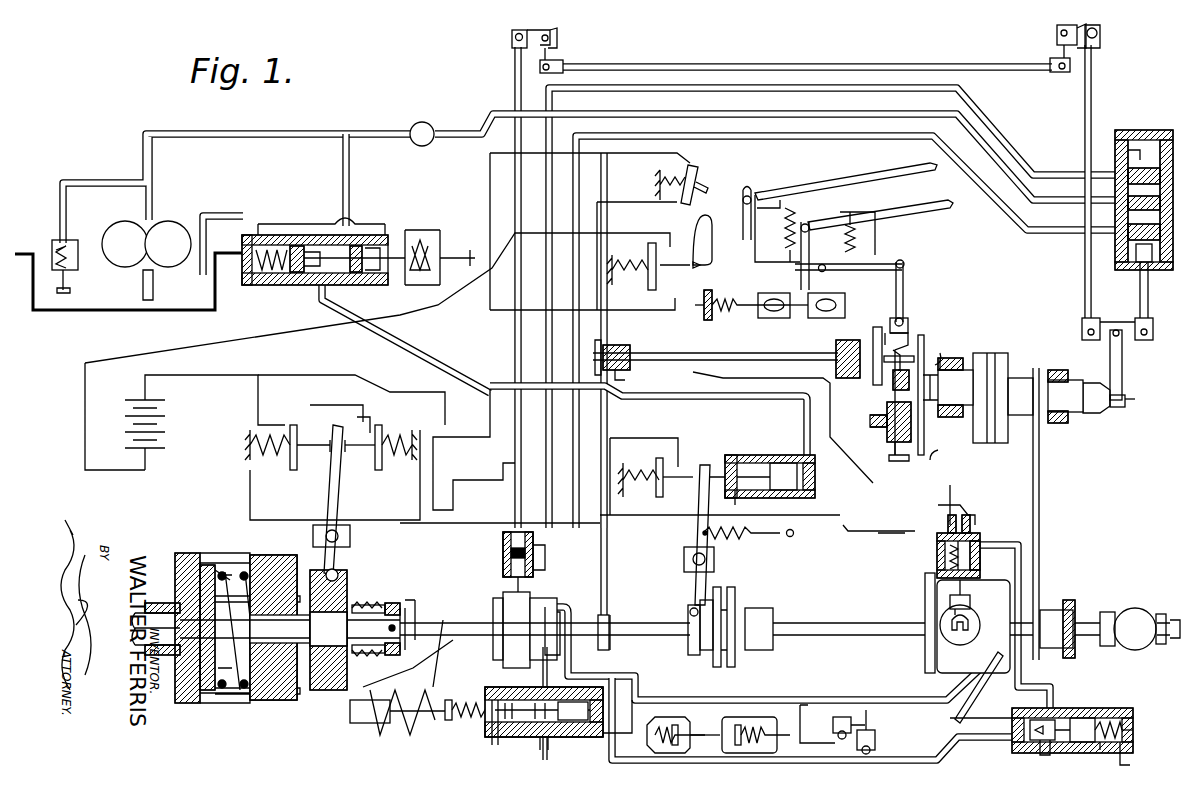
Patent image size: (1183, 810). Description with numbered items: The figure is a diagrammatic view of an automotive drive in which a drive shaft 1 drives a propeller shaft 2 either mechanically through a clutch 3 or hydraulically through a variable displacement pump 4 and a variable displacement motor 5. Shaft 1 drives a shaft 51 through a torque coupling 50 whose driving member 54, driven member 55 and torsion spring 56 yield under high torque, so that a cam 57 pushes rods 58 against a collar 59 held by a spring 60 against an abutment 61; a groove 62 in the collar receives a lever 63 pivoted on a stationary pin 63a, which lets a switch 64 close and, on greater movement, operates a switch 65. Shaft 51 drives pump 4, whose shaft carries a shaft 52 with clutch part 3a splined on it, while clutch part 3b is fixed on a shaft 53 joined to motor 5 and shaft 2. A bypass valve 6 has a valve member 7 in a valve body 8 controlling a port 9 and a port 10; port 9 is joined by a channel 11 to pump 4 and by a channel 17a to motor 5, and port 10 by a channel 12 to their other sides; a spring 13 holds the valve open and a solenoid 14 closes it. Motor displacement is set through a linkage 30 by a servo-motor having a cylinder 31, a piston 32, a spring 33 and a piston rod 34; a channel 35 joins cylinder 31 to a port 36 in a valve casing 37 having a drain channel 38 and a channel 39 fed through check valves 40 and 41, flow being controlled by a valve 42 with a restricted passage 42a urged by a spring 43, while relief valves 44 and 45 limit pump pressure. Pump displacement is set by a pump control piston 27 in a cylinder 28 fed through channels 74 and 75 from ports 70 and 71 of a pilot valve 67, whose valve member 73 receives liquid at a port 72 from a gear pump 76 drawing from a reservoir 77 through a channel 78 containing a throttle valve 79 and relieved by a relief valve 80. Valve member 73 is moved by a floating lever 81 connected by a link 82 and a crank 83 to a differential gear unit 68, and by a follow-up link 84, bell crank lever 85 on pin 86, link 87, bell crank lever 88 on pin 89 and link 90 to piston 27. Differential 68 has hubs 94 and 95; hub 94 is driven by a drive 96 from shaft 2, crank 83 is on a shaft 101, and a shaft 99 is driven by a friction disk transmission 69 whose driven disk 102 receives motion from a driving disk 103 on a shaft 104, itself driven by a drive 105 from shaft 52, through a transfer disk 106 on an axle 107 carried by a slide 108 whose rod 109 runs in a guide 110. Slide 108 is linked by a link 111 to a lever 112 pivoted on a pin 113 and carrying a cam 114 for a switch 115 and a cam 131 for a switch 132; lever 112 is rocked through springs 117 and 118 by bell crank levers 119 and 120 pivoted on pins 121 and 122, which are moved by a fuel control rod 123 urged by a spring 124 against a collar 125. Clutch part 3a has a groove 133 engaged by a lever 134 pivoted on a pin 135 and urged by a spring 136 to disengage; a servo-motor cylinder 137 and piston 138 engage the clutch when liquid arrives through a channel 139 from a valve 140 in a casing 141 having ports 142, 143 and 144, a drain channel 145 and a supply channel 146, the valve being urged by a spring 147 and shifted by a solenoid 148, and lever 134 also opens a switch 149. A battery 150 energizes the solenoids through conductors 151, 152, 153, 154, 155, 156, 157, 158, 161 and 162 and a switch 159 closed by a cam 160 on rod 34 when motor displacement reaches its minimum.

The input shaft 1 is at (140, 604).
The output shaft ball joint 2 is at (1090, 618).
The pulley 3 is at (728, 585).
The pulley flange 3a is at (725, 667).
The pulley hub 3b is at (764, 650).
The clutch pulley 4 is at (493, 600).
The governor housing 5 is at (935, 660).
The valve assembly 6 is at (542, 770).
The valve piston 7 is at (590, 713).
The valve body 8 is at (601, 736).
The valve stem 9 is at (540, 737).
The valve stem 10 is at (575, 737).
The link 11 is at (543, 675).
The pipe 12 is at (572, 660).
The spring 13 is at (472, 720).
The spring 14 is at (407, 736).
The pipe 17a is at (618, 770).
The valve 27 is at (502, 550).
The valve body 28 is at (502, 565).
The governor weight block 30 is at (948, 600).
The valve body 31 is at (937, 568).
The valve plug 32 is at (980, 560).
The spring 33 is at (950, 548).
The valve cap 34 is at (976, 532).
The pipe 35 is at (1040, 682).
The port 36 is at (1048, 755).
The port 37 is at (1133, 725).
The port 38 is at (1128, 762).
The lever 39 is at (993, 723).
The solenoid 40 is at (875, 740).
The solenoid 41 is at (838, 703).
The valve 42 is at (1083, 720).
The port 42a is at (1100, 755).
The spring 43 is at (1112, 720).
The dashpot 44 is at (745, 720).
The dashpot 45 is at (657, 720).
The clutch actuator 50 is at (240, 545).
The link 51 is at (439, 630).
The shaft 52 is at (661, 645).
The shaft 53 is at (830, 622).
The cylinder head 54 is at (188, 705).
The piston 55 is at (275, 700).
The spring 56 is at (228, 700).
The end wall 57 is at (210, 700).
The cylinder wall 58 is at (297, 596).
The pin 59 is at (337, 573).
The spring 60 is at (360, 606).
The collar 61 is at (388, 605).
The block 62 is at (340, 690).
The lever 63 is at (349, 426).
The pivot 63a is at (350, 535).
The contact plate 64 is at (378, 472).
The contact plate 65 is at (293, 472).
The control valve 67 is at (1180, 117).
The drive unit 68 is at (1032, 334).
The clutch 69 is at (927, 480).
The port 70 is at (1128, 245).
The port 71 is at (1128, 193).
The port 72 is at (1128, 220).
The port 73 is at (1128, 160).
The pipe 74 is at (1051, 232).
The pipe 75 is at (1065, 171).
The generator pump unit 76 is at (154, 220).
The conduit 77 is at (98, 308).
The pipe 78 is at (243, 142).
The throttle valve 79 is at (409, 122).
The relief valve 80 is at (58, 240).
The bracket 81 is at (1130, 324).
The link 82 is at (1122, 368).
The fork 83 is at (1103, 417).
The pipe 84 is at (1092, 57).
The lever 85 is at (1050, 50).
The bracket 86 is at (1055, 27).
The pipe 87 is at (905, 62).
The lever 88 is at (565, 67).
The bracket 89 is at (558, 37).
The pipe 90 is at (514, 83).
The clutch member 94 is at (1065, 396).
The clutch member 95 is at (948, 387).
The disc 96 is at (1041, 457).
The hub 99 is at (944, 358).
The cone 101 is at (1090, 413).
The disc 102 is at (924, 433).
The disc 103 is at (875, 330).
The shaft 104 is at (790, 347).
The disc 105 is at (608, 560).
The lever 106 is at (908, 347).
The block 107 is at (893, 385).
The pivot 108 is at (908, 323).
The foot 109 is at (895, 453).
The block 110 is at (887, 433).
The link 111 is at (904, 293).
The bar 112 is at (899, 260).
The pivot 113 is at (826, 271).
The arrow 114 is at (696, 267).
The spring plate 115 is at (653, 286).
The spring 117 is at (860, 238).
The spring 118 is at (793, 275).
The lever arm 119 is at (912, 206).
The lever arm 120 is at (898, 170).
The pivot 121 is at (807, 224).
The pivot 122 is at (735, 190).
The rod 123 is at (703, 305).
The spring 124 is at (720, 313).
The plate 125 is at (708, 294).
The bracket 131 is at (695, 228).
The lever 132 is at (700, 168).
The crank 133 is at (691, 616).
The lever 134 is at (697, 583).
The pivot 135 is at (714, 567).
The spring 136 is at (780, 537).
The rod 137 is at (815, 493).
The cylinder 138 is at (790, 470).
The pipe 139 is at (770, 400).
The valve spool 140 is at (346, 259).
The valve 141 is at (383, 234).
The piston 142 is at (296, 285).
The pipe 143 is at (320, 290).
The piston 144 is at (350, 284).
The pipe 145 is at (264, 216).
The pipe 146 is at (342, 162).
The spring 147 is at (264, 285).
The valve 148 is at (428, 236).
The spring plate 149 is at (655, 490).
The battery 150 is at (160, 428).
The wire 151 is at (200, 384).
The wire 152 is at (248, 488).
The wire 153 is at (195, 350).
The wire 154 is at (660, 306).
The rod 155 is at (402, 605).
The wire 156 is at (363, 405).
The contact 157 is at (325, 470).
The wire 158 is at (435, 470).
The wire 159 is at (895, 538).
The switch 160 is at (950, 490).
The wire 161 is at (649, 207).
The pipe 162 is at (623, 162).